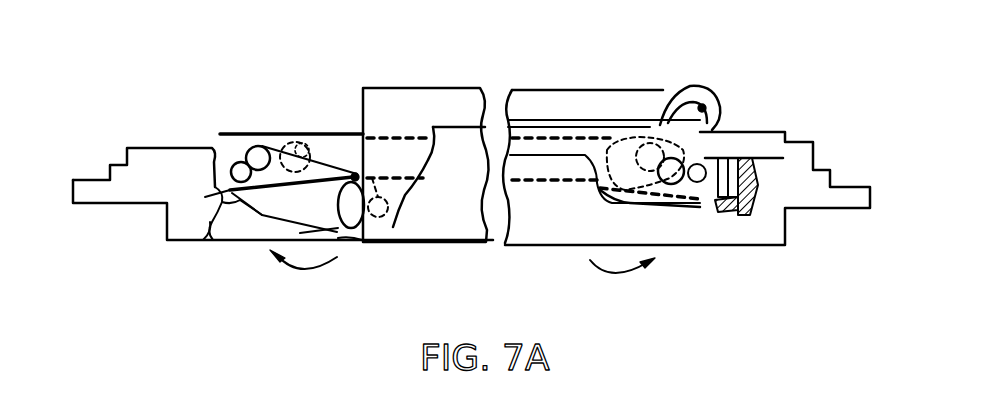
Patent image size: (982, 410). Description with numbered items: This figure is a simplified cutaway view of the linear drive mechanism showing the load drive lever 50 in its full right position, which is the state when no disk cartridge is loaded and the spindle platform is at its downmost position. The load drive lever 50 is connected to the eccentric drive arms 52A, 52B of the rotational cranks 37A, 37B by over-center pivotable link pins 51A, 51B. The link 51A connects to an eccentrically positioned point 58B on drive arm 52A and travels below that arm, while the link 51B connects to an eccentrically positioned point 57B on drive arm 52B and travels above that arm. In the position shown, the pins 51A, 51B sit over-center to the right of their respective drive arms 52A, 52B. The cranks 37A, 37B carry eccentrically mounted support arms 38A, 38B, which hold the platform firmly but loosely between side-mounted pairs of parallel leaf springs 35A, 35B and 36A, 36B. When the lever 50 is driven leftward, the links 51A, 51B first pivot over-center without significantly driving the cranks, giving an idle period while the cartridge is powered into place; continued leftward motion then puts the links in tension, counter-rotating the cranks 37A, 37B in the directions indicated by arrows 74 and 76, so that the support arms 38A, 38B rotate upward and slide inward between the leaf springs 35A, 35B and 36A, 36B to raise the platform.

The parallel leaf spring 35A is at (245, 131).
The rotational crank 37A is at (300, 142).
The eccentric drive arm 52A is at (340, 132).
The load drive lever 50 is at (525, 88).
The parallel leaf spring 36A is at (578, 140).
The rotational crank 37B is at (637, 140).
The eccentric drive arm 52B is at (660, 118).
The eccentrically positioned point 57B is at (697, 100).
The pivotable link pin 51B is at (717, 132).
The support arm 38A is at (216, 218).
The parallel leaf spring 35B is at (247, 223).
The eccentrically positioned point 58B is at (348, 240).
The pivotable link pin 51A is at (363, 243).
The arrow 74 is at (307, 275).
The arrow 76 is at (610, 277).
The parallel leaf spring 36B is at (675, 207).
The support arm 38B is at (697, 207).